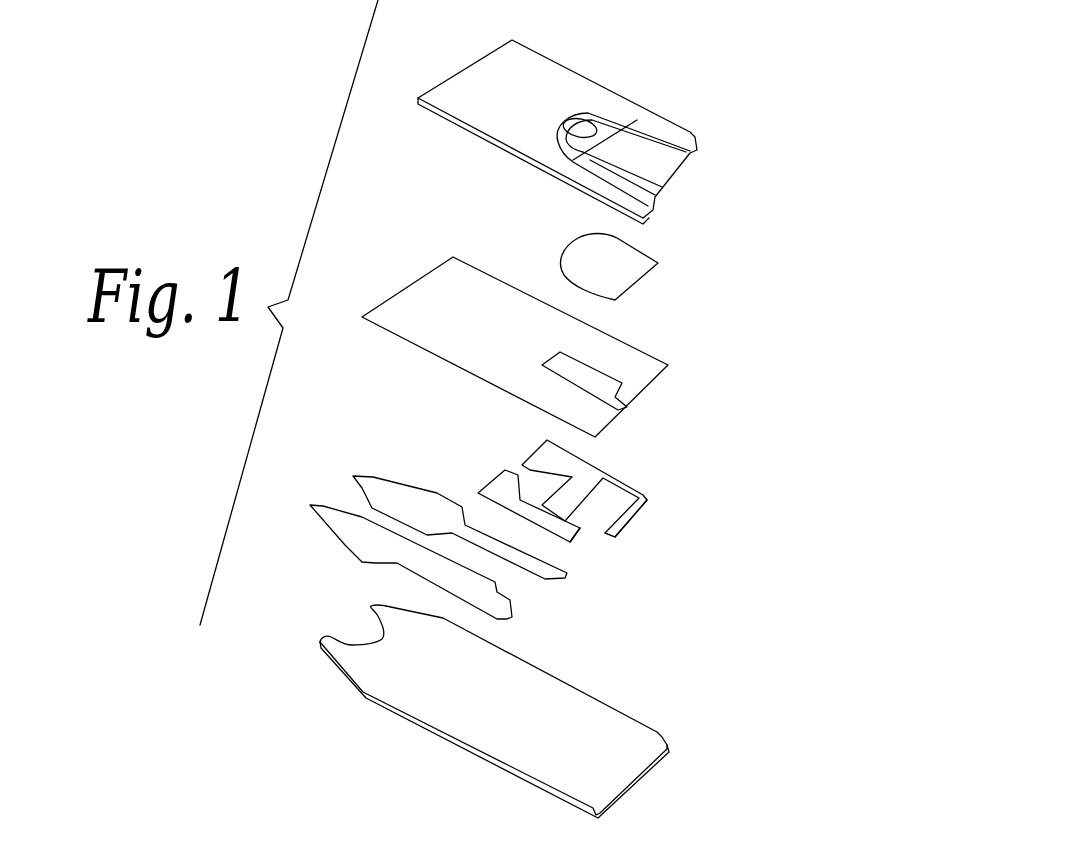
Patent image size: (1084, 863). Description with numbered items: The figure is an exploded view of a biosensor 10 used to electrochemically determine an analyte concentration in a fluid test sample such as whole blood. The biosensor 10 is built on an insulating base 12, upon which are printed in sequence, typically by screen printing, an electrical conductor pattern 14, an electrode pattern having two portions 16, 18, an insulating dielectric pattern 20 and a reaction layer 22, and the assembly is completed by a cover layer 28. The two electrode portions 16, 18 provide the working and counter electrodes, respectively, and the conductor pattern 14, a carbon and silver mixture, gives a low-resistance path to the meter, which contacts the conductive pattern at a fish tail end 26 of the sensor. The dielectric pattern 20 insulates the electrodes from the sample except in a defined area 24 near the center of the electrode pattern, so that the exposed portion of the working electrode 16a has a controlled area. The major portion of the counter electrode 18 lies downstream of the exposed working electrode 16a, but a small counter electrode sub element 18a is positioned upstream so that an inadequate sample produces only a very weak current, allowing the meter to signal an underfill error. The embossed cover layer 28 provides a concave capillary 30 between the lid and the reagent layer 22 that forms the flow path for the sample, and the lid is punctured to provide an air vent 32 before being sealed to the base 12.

The biosensor 10 is at (219, 168).
The insulating base 12 is at (663, 737).
The electrical conductor pattern 14 is at (363, 525).
The working electrode 16 is at (495, 488).
The exposed portion of the working electrode 16a is at (575, 533).
The counter electrode 18 is at (602, 467).
The counter electrode sub element 18a is at (628, 525).
The insulating (dielectric) pattern 20 is at (420, 295).
The reaction layer 22 is at (580, 253).
The defined area near the center of the electrode pattern 24 is at (592, 380).
The fish tail end 26 is at (345, 616).
The cover layer 28 is at (463, 88).
The capillary 30 is at (667, 177).
The air vent 32 is at (578, 125).